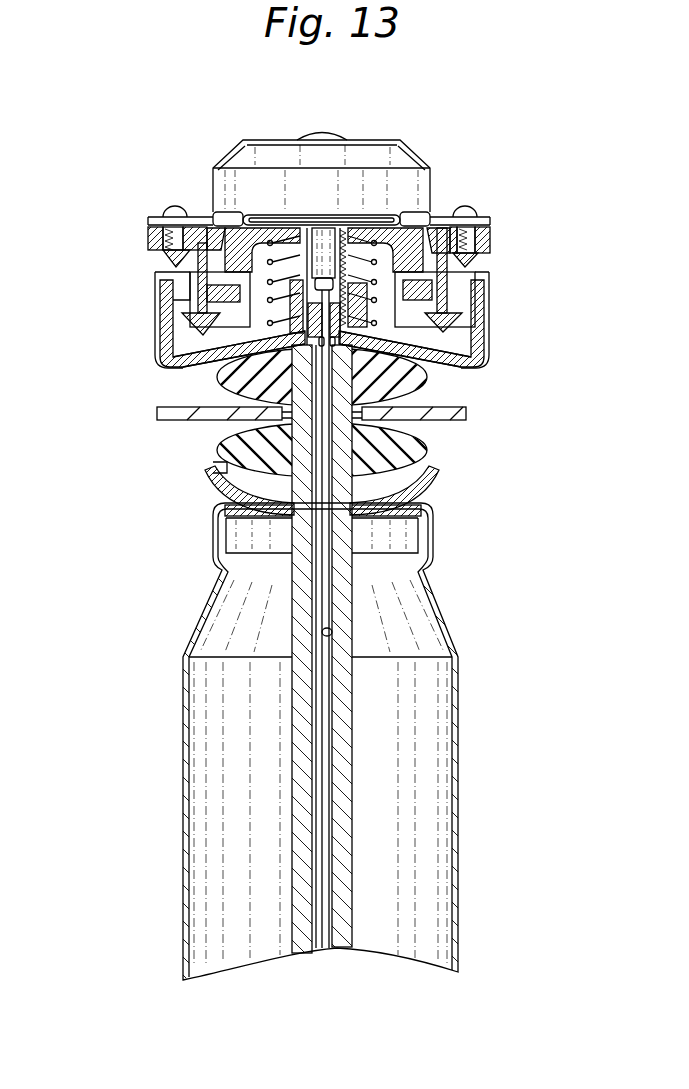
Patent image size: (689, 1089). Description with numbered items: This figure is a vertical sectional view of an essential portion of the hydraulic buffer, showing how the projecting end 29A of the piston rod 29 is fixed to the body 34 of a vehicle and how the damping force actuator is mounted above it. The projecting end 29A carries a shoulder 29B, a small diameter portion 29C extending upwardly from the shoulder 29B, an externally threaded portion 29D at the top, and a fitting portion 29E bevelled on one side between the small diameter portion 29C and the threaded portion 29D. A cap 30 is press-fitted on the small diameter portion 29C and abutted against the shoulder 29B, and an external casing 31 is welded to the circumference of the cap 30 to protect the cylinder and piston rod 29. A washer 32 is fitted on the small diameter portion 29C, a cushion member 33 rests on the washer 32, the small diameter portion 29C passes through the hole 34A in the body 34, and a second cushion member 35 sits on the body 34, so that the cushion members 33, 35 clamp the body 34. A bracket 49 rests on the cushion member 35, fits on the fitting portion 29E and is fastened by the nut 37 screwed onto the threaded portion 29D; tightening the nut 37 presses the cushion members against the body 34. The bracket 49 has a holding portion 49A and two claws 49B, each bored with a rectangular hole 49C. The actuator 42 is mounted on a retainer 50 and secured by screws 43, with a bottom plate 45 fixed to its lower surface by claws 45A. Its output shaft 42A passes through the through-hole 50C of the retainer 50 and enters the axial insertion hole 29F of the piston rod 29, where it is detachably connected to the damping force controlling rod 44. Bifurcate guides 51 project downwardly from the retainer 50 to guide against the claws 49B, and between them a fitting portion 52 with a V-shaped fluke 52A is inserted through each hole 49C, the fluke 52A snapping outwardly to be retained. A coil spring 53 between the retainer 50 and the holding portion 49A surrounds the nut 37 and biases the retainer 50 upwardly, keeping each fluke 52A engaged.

The piston rod 29 is at (355, 762).
The projecting end 29A is at (300, 618).
The shoulder 29B is at (433, 540).
The small diameter portion 29C is at (352, 437).
The externally threaded portion 29D is at (336, 232).
The fitting portion 29E is at (230, 345).
The axial insertion hole 29F is at (332, 630).
The cap 30 is at (215, 538).
The external casing 31 is at (180, 778).
The washer 32 is at (208, 465).
The cushion member 33 is at (225, 447).
The body of a vehicle 34 is at (465, 423).
The hole 34A is at (355, 395).
The cushion member 35 is at (228, 380).
The nut 37 is at (190, 263).
The actuator 42 is at (412, 164).
The output shaft 42A is at (318, 226).
The screws 43 is at (172, 210).
The damping force controlling rod 44 is at (333, 688).
The bottom plate 45 is at (150, 220).
The claws 45A is at (215, 230).
The bracket 49 is at (490, 345).
The holding portion 49A is at (477, 362).
The claws 49B is at (157, 303).
The hole 49C is at (155, 280).
The retainer 50 is at (150, 238).
The through-hole 50C is at (225, 222).
The bifurcate guides 51 is at (178, 318).
The fitting portion with a fluke 52 is at (455, 270).
The fluke 52A is at (477, 317).
The coil spring 53 is at (418, 222).